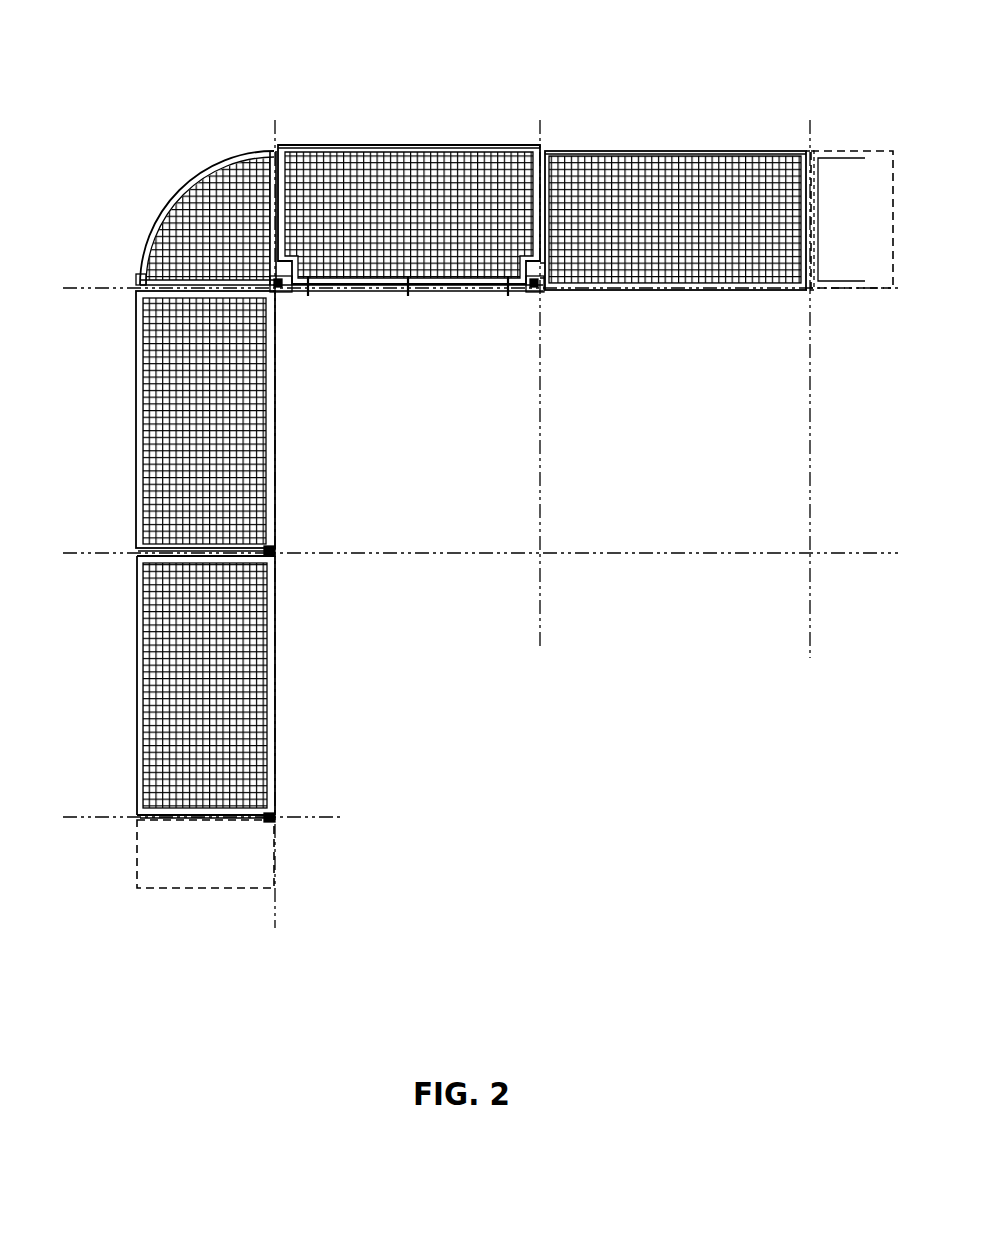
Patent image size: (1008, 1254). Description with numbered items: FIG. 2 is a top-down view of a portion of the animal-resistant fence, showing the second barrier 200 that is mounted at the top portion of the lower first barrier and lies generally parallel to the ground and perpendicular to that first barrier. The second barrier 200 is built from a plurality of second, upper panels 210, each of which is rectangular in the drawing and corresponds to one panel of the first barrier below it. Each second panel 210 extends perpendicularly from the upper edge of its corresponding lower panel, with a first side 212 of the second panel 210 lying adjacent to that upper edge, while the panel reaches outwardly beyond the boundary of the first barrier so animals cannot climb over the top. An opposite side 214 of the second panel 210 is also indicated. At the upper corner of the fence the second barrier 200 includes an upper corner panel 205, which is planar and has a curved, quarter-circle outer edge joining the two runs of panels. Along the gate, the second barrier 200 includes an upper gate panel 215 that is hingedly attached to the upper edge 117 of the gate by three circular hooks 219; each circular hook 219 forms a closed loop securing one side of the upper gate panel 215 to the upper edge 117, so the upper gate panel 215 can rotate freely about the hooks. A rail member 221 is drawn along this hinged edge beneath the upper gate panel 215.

The second barrier 200 is at (184, 44).
The upper corner panel 205 is at (205, 205).
The upper gate panel 215 is at (320, 170).
The circular hook 219 is at (299, 286).
The rail 221 is at (353, 282).
The upper edge of the gate 117 is at (440, 284).
The second panel 210 is at (165, 655).
The outer frame member 214 is at (128, 726).
The first side of the second panel 212 is at (270, 727).